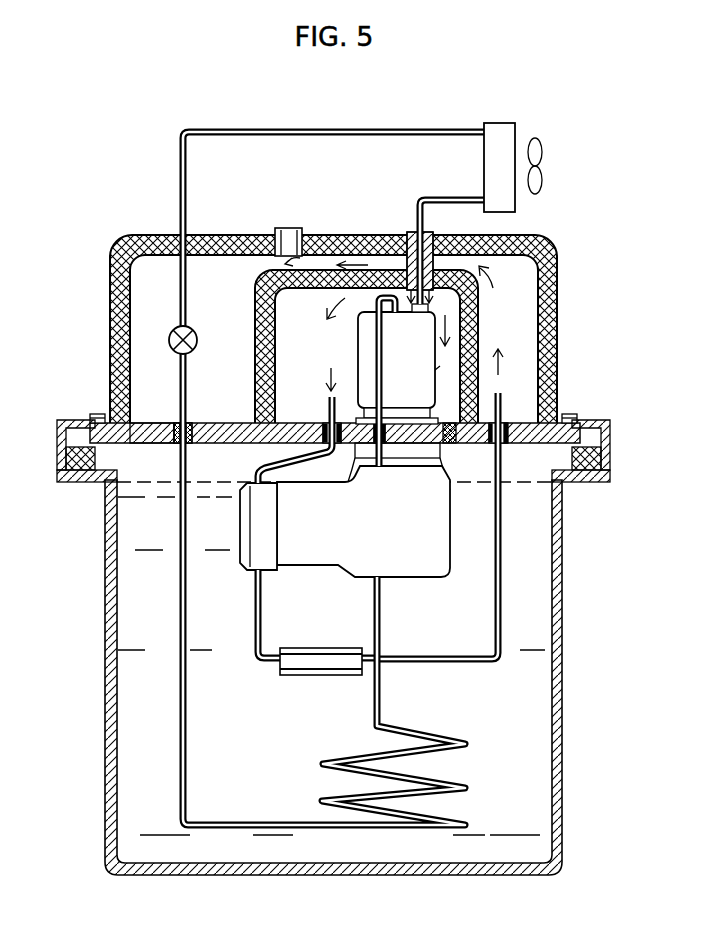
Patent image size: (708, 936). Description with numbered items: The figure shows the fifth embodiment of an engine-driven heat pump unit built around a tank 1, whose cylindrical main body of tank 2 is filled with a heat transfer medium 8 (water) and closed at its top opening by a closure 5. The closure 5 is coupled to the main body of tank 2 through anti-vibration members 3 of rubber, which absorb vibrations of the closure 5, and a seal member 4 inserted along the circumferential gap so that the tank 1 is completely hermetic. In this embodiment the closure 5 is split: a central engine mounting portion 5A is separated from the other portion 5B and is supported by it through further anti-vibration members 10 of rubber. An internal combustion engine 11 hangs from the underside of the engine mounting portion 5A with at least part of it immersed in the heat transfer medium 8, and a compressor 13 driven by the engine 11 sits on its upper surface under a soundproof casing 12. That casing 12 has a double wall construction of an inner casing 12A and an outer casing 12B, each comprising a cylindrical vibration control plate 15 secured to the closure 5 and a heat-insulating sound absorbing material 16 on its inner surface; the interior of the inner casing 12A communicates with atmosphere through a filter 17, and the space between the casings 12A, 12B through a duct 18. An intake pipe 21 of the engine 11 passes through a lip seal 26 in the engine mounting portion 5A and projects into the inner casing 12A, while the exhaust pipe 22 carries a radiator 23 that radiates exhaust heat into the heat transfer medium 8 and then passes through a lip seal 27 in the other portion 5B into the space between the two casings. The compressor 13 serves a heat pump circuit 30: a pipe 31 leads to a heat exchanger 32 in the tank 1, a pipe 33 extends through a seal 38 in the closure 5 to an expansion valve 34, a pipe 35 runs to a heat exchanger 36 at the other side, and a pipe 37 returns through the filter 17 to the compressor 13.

The tank 1 is at (586, 661).
The main body of tank 2 is at (563, 730).
The anti-vibration members 3 is at (63, 458).
The seal member 4 is at (62, 422).
The closure 5 is at (574, 423).
The engine mounting portion 5A is at (405, 450).
The other portion 5B is at (148, 423).
The heat transfer medium 8 is at (563, 814).
The anti-vibration members 10 is at (454, 446).
The internal combustion engine 11 is at (418, 578).
The soundproof casing 12 is at (611, 264).
The inner casing 12A is at (479, 298).
The outer casing 12B is at (558, 276).
The compressor 13 is at (358, 350).
The vibration control plate 15 is at (256, 284).
The sound absorbing material 16 is at (275, 344).
The filter 17 is at (433, 237).
The duct 18 is at (298, 228).
The intake pipe 21 is at (292, 465).
The exhaust pipe 22 is at (435, 665).
The radiator 23 is at (312, 675).
The lip seal 26 is at (349, 455).
The lip seal 27 is at (513, 448).
The heat pump circuit 30 is at (326, 124).
The pipe 31 is at (373, 628).
The heat exchanger 32 is at (468, 745).
The pipe 33 is at (188, 762).
The expansion valve 34 is at (197, 340).
The pipe 35 is at (232, 138).
The heat exchanger 36 is at (500, 123).
The pipe 37 is at (434, 198).
The seal 38 is at (190, 423).